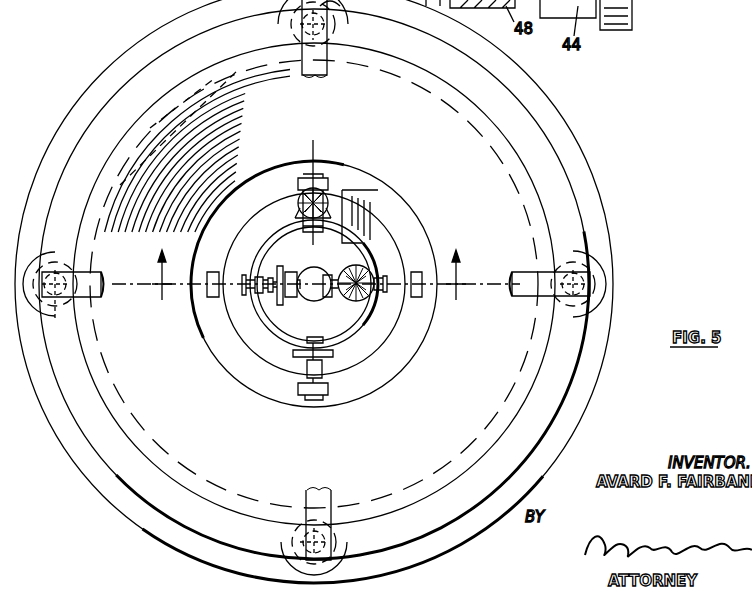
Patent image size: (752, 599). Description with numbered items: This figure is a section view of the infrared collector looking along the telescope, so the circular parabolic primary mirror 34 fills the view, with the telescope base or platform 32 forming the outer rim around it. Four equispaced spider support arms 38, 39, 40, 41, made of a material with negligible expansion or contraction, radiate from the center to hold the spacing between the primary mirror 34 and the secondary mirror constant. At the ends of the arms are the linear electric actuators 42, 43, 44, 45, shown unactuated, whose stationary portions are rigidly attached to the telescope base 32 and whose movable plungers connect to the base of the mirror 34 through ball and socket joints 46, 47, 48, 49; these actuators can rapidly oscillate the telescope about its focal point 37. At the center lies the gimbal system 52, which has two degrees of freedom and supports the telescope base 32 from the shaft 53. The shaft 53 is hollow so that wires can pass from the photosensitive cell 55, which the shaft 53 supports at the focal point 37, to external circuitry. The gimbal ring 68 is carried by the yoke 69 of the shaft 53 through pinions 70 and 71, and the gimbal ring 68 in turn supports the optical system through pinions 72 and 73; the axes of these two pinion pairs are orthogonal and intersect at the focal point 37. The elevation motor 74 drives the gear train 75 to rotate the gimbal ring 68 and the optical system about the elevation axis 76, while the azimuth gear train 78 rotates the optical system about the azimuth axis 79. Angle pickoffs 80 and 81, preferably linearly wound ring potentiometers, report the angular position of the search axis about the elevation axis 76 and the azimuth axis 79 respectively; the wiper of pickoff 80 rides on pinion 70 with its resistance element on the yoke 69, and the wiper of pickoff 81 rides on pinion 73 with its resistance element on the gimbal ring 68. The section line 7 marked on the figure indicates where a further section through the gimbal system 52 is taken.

The section line 7- 7 is at (309, 285).
The telescope base 32 is at (592, 374).
The parabolic primary mirror 34 is at (478, 207).
The focal point 37 is at (316, 280).
The spider support arm 38 is at (322, 74).
The spider support arm 39 is at (100, 296).
The spider support arm 40 is at (324, 500).
The spider support arm 41 is at (520, 296).
The linear electric actuator 42 is at (270, 8).
The linear electric actuator 43 is at (45, 262).
The linear electric actuator 44 is at (338, 568).
The linear electric actuator 45 is at (598, 272).
The ball and socket joint 46 is at (335, 24).
The ball and socket joint 47 is at (57, 305).
The ball and socket joint 48 is at (343, 538).
The ball and socket joint 49 is at (588, 290).
The gimbal system 52 is at (380, 330).
The shaft 53 is at (322, 294).
The photosensitive cell 55 is at (306, 295).
The gimbal ring 68 is at (266, 331).
The yoke 69 is at (296, 268).
The pinion 70 is at (261, 279).
The pinion 71 is at (376, 298).
The pinion 72 is at (330, 180).
The pinion 73 is at (318, 372).
The elevation motor 74 is at (358, 208).
The gear train 75 is at (366, 278).
The elevation axis 76 is at (458, 270).
The gear train 78 is at (303, 200).
The azimuth axis 79 is at (315, 156).
The angle pickoff 80 is at (280, 258).
The angle pickoff 81 is at (292, 354).